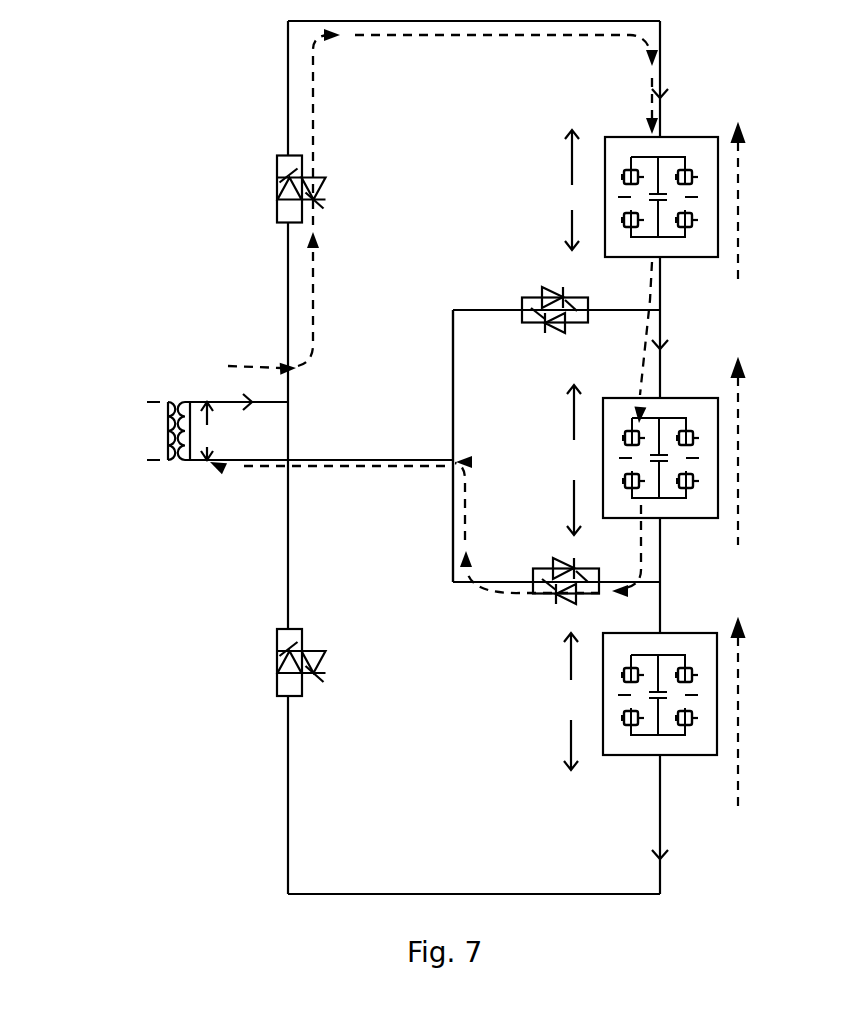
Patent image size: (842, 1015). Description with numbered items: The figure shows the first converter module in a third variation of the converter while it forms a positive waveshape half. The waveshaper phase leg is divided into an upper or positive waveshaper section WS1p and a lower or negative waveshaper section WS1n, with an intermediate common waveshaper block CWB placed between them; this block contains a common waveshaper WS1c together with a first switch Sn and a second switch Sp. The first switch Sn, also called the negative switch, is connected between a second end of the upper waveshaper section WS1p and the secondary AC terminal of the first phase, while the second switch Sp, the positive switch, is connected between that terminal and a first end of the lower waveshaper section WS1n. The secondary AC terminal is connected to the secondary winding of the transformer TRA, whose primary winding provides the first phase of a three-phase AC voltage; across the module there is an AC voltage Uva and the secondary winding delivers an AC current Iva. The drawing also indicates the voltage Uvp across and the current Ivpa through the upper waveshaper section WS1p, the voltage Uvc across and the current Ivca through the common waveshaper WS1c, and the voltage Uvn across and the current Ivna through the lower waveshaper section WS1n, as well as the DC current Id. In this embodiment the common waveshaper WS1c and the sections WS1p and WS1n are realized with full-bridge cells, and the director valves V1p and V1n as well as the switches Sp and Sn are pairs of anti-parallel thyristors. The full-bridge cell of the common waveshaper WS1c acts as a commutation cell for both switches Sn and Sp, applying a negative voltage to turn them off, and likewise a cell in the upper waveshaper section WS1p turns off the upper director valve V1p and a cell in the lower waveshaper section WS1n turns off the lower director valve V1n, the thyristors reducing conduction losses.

The transformer TRA is at (131, 431).
The upper director valve V1p is at (264, 189).
The lower director valve V1n is at (263, 662).
The first switch Sn is at (554, 325).
The second switch Sp is at (557, 560).
The common waveshaper block CWB is at (499, 446).
The upper waveshaper section WS1p is at (591, 197).
The common waveshaper WS1c is at (703, 518).
The lower waveshaper section WS1n is at (586, 694).
The voltage across upper waveshaper section Uvp is at (576, 190).
The voltage across common waveshaper Uvc is at (577, 460).
The voltage across lower waveshaper section Uvn is at (579, 701).
The AC voltage Uva is at (220, 431).
The current through upper waveshaper section Ivpa is at (639, 88).
The current through common waveshaper Ivca is at (683, 346).
The current through lower waveshaper section Ivna is at (681, 859).
The AC current Iva is at (257, 390).
The DC current Id is at (732, 466).